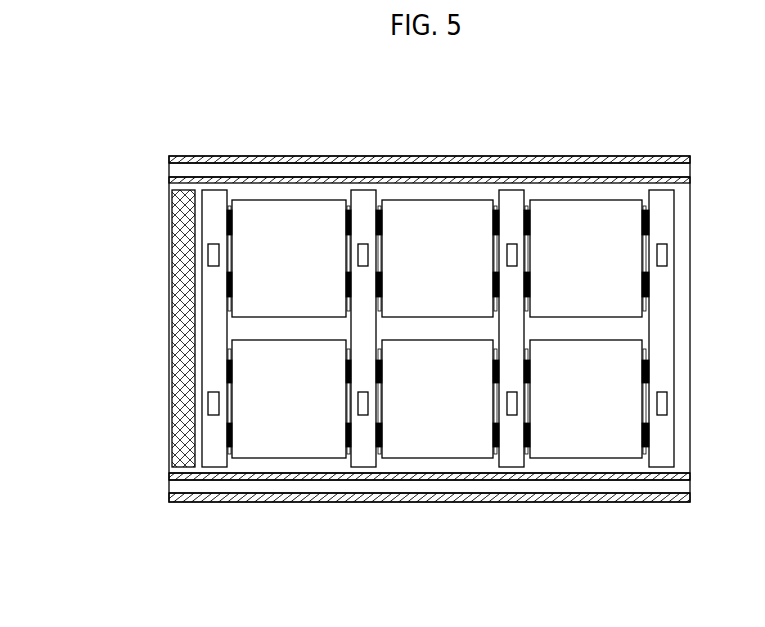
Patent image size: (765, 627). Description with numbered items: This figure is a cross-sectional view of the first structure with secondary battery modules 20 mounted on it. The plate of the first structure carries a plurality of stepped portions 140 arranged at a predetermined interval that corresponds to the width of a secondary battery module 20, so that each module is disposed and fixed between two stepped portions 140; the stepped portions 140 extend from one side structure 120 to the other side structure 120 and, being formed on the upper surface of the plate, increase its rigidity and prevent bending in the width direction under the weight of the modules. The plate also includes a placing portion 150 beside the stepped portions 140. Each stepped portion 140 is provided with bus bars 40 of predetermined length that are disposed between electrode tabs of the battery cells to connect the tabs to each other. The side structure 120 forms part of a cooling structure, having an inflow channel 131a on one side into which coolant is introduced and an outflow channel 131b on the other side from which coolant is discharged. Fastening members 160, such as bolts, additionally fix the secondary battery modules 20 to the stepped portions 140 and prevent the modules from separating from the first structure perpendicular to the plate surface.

The secondary battery module 20 is at (251, 441).
The bus bar 40 is at (667, 249).
The side structure 120 is at (690, 160).
The inflow channel 131a is at (172, 486).
The outflow channel 131b is at (172, 170).
The stepped portion 140 is at (507, 197).
The placing portion 150 is at (172, 215).
The fastening member 160 is at (228, 362).